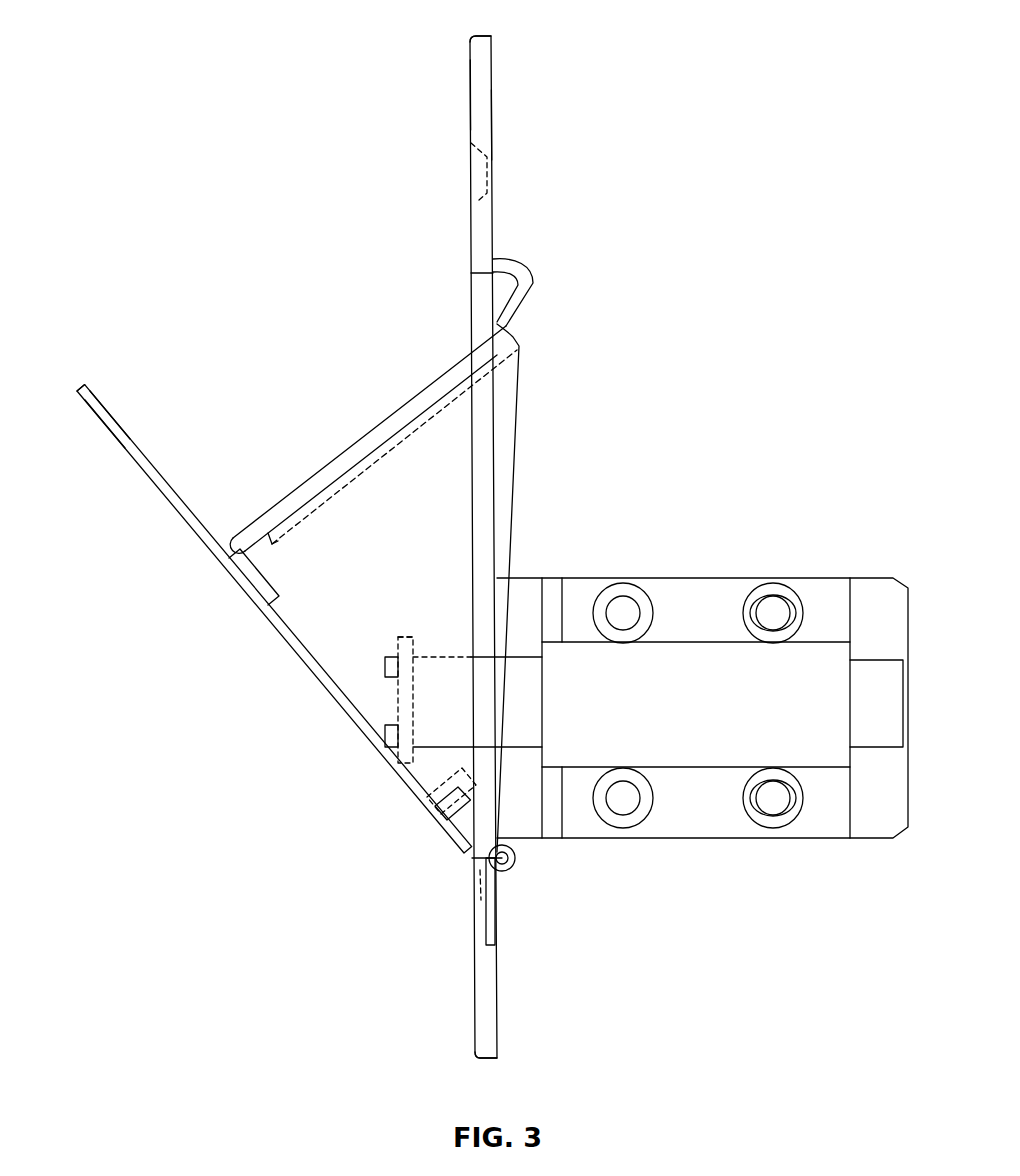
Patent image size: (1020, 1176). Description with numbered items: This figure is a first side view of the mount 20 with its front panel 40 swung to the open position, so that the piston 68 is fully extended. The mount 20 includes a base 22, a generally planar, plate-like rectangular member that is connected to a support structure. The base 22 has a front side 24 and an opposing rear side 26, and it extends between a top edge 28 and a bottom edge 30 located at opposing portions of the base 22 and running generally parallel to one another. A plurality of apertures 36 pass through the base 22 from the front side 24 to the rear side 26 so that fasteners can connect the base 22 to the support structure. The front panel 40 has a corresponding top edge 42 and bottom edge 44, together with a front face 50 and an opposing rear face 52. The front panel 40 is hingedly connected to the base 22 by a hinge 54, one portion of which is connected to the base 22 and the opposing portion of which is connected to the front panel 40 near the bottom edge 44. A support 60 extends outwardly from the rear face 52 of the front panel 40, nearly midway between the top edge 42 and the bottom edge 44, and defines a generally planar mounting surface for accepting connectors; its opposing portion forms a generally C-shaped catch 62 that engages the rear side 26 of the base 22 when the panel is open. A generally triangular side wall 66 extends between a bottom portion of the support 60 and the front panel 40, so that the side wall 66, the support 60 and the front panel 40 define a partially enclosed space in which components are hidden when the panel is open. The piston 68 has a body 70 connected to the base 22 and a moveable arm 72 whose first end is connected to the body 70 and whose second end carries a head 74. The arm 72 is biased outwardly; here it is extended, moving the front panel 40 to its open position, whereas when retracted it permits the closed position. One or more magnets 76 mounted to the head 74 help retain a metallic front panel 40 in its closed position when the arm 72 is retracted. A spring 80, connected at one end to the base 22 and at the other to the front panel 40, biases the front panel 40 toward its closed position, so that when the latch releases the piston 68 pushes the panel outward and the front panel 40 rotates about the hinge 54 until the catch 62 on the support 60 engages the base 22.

The mount 20 is at (602, 62).
The base 22 is at (485, 77).
The front side 24 is at (496, 124).
The rear side 26 is at (468, 99).
The top edge 28 is at (481, 37).
The bottom edge 30 is at (484, 1060).
The apertures 36 is at (471, 191).
The front panel 40 is at (160, 485).
The top edge 42 is at (78, 388).
The bottom edge 44 is at (470, 862).
The front face 50 is at (95, 432).
The rear face 52 is at (110, 402).
The hinge 54 is at (503, 895).
The support 60 is at (336, 450).
The catch 62 is at (535, 270).
The side wall 66 is at (514, 370).
The piston 68 is at (702, 673).
The body 70 is at (832, 580).
The arm 72 is at (456, 672).
The head 74 is at (398, 638).
The magnets 76 is at (390, 656).
The spring 80 is at (516, 860).